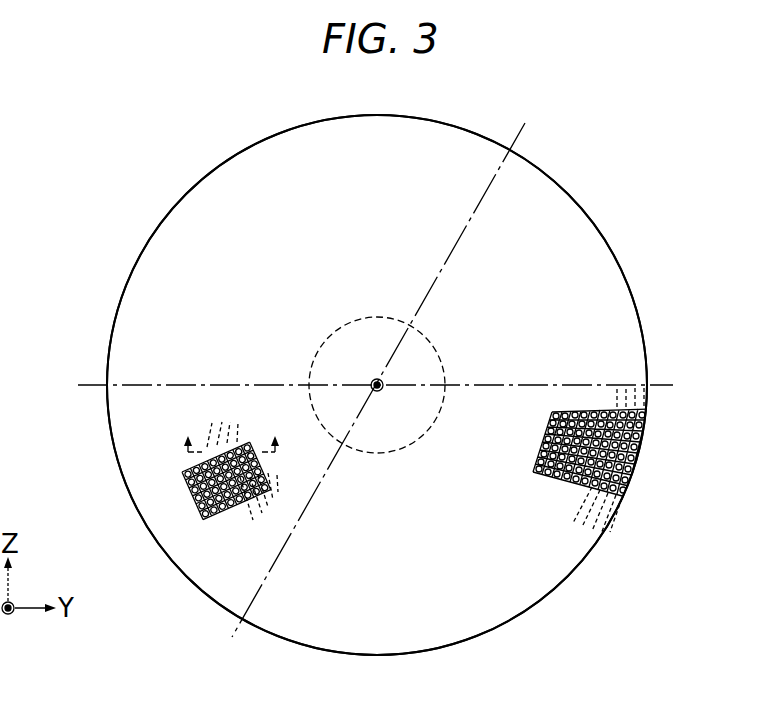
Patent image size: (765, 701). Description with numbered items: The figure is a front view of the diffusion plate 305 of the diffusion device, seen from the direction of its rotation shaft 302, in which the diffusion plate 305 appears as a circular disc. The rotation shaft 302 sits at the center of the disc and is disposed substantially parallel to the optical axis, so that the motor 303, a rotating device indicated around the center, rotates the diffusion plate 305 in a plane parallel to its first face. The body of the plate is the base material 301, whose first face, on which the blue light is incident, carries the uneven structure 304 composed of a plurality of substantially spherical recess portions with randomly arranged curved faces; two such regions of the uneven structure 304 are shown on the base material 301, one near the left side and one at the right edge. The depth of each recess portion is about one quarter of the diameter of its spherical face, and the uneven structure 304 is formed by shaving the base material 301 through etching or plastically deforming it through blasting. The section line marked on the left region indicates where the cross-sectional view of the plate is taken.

The diffusion plate 305 is at (212, 151).
The base material 301 is at (193, 213).
The rotation shaft 302 is at (379, 391).
The motor 303 is at (312, 358).
The uneven structure 304 is at (183, 478).